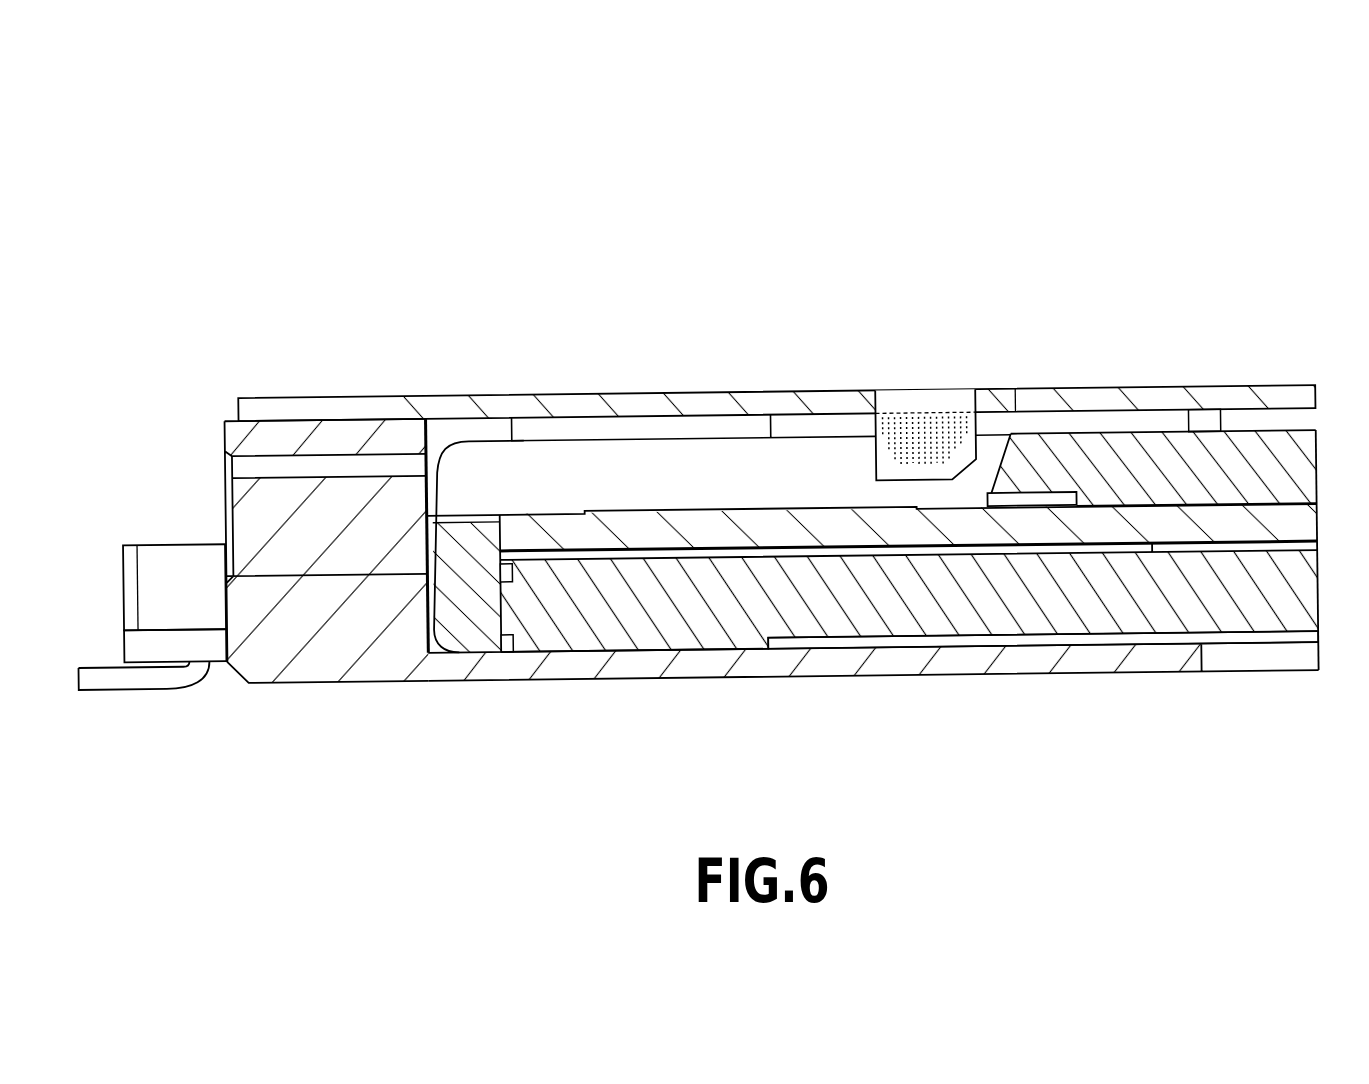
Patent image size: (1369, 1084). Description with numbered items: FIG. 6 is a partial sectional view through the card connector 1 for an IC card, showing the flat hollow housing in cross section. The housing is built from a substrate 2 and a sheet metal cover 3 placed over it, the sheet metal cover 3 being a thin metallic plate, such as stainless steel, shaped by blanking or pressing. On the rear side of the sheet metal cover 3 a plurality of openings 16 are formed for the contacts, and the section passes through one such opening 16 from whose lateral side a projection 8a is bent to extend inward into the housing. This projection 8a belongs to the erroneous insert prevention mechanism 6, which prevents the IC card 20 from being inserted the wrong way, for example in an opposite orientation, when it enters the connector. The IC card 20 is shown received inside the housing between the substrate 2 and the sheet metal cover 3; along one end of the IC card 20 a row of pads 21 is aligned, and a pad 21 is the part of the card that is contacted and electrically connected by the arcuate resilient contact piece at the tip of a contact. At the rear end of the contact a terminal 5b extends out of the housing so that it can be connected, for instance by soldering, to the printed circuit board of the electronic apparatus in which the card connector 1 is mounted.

The card connector 1 is at (234, 248).
The substrate 2 is at (673, 662).
The sheet metal cover 3 is at (536, 400).
The terminal 5b is at (131, 693).
The erroneous insert prevention mechanism 6 is at (934, 383).
The projection 8a is at (937, 437).
The opening 16 is at (670, 412).
The IC card 20 is at (1324, 628).
The pad 21 is at (760, 512).